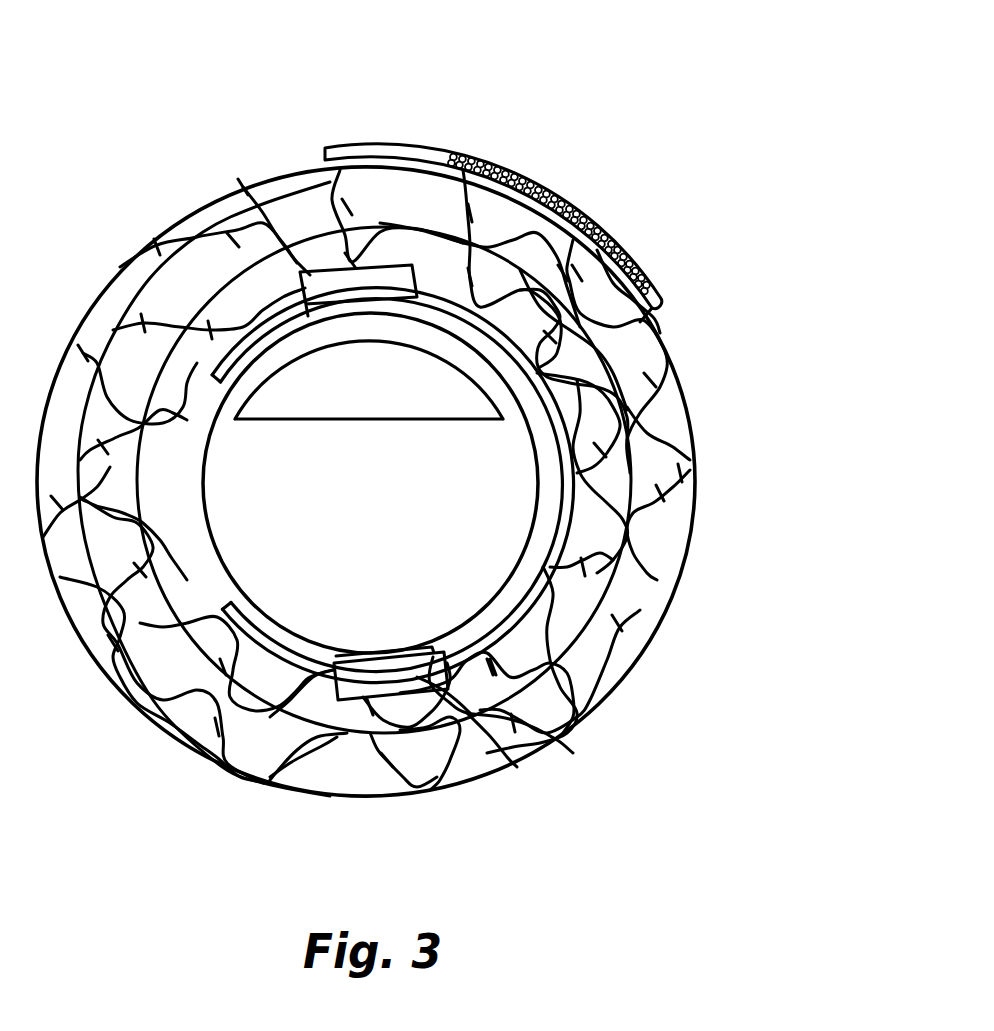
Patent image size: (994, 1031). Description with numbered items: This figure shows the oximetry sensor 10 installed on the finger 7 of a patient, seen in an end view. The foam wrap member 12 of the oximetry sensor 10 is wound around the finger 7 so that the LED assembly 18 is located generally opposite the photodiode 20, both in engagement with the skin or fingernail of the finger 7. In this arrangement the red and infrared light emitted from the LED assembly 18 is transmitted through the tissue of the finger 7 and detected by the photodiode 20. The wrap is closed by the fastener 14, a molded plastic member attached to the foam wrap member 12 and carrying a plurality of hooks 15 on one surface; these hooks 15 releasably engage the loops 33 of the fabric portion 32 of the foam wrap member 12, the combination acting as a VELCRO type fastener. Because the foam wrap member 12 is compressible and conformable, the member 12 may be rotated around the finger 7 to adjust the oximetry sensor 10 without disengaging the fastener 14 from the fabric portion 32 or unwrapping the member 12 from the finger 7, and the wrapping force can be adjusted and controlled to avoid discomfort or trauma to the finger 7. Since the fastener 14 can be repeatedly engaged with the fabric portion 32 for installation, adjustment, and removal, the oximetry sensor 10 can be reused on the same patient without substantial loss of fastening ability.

The oximetry sensor 10 is at (714, 179).
The foam wrap member 12 is at (693, 470).
The fastener 14 is at (521, 173).
The hooks 15 is at (447, 165).
The LED assembly 18 is at (430, 655).
The photodiode 20 is at (245, 195).
The fabric portion 32 is at (690, 388).
The loops 33 is at (653, 320).
The finger 7 is at (385, 514).